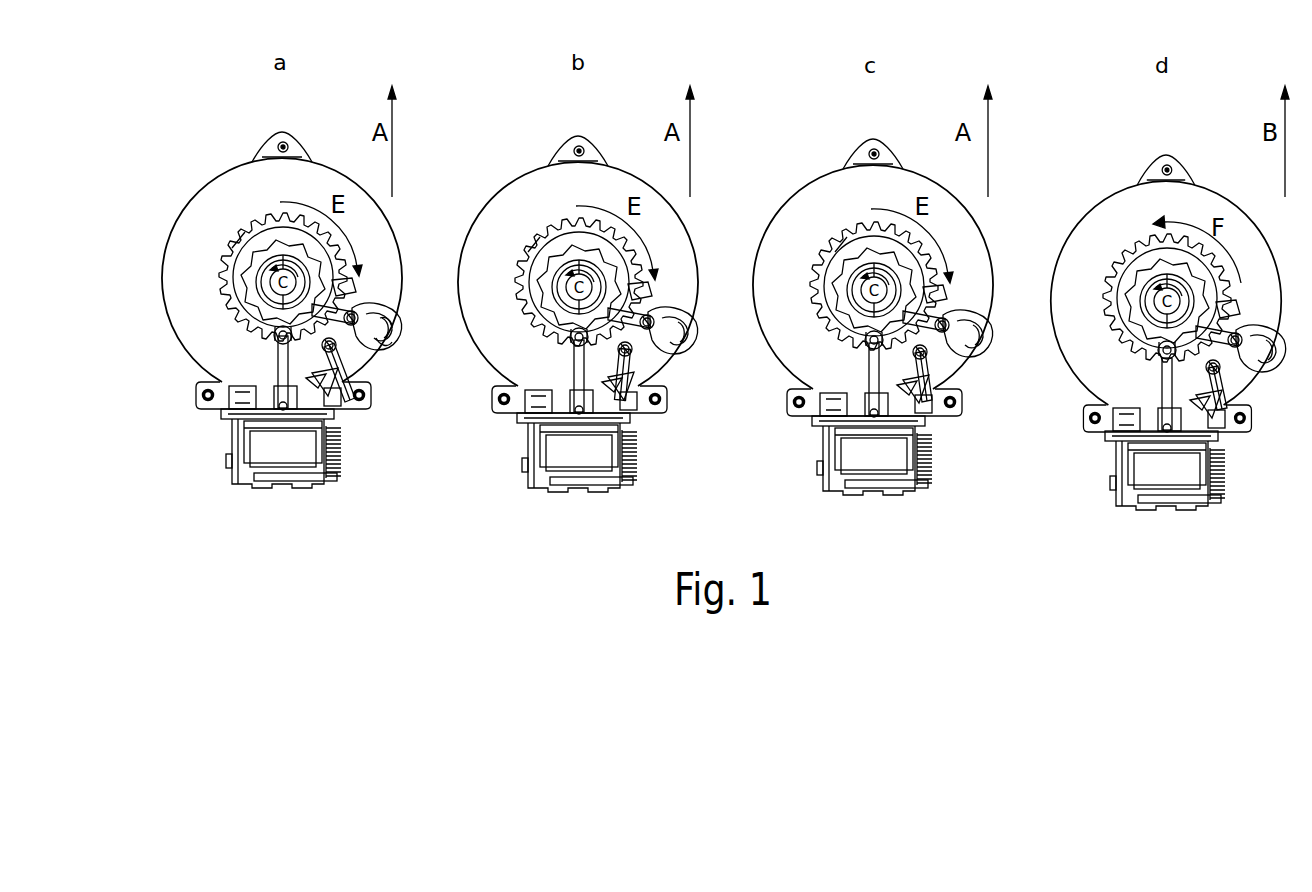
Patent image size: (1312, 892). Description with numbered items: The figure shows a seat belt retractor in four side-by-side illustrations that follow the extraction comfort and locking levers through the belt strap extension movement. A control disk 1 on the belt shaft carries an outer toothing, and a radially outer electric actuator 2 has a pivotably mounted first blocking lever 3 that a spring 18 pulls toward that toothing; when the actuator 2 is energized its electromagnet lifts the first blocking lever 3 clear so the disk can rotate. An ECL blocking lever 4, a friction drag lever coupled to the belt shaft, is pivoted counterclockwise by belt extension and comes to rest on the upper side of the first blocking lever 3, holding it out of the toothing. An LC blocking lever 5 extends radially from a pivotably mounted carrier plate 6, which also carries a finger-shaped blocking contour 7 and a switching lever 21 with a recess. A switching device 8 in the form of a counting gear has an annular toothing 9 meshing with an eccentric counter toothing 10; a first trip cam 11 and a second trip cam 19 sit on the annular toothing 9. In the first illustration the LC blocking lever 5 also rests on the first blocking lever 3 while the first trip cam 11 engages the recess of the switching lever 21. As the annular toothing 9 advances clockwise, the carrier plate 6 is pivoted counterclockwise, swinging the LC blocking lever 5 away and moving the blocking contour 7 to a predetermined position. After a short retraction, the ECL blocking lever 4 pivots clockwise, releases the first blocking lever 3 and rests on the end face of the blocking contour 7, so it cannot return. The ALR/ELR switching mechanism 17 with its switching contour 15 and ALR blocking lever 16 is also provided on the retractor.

The control disk 1 is at (240, 425).
The electric actuator 2 is at (345, 467).
The first blocking lever 3 is at (256, 393).
The ECL blocking lever 4 is at (335, 400).
The LC blocking lever 5 is at (335, 385).
The carrier plate 6 is at (355, 365).
The blocking contour 7 is at (275, 350).
The switching device 8 is at (250, 232).
The annular toothing 9 is at (228, 257).
The counter toothing 10 is at (345, 285).
The first trip cam 11 is at (350, 300).
The switching contour 15 is at (382, 358).
The ALR blocking lever 16 is at (383, 340).
The ALR/ELR switching mechanism 17 is at (387, 325).
The spring 18 is at (303, 455).
The second trip cam 19 is at (243, 232).
The switching lever 21 is at (273, 322).